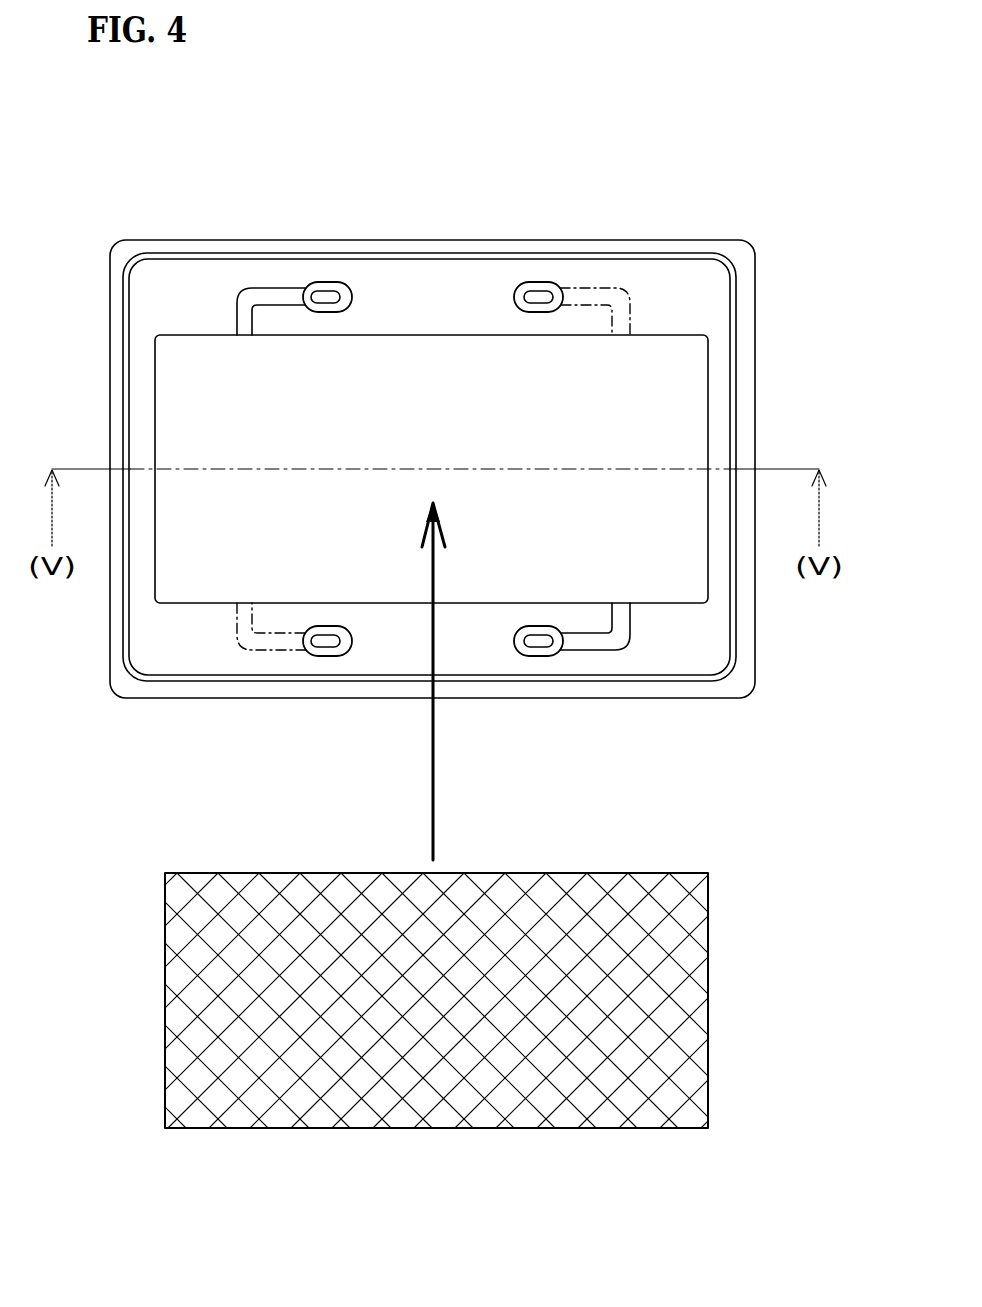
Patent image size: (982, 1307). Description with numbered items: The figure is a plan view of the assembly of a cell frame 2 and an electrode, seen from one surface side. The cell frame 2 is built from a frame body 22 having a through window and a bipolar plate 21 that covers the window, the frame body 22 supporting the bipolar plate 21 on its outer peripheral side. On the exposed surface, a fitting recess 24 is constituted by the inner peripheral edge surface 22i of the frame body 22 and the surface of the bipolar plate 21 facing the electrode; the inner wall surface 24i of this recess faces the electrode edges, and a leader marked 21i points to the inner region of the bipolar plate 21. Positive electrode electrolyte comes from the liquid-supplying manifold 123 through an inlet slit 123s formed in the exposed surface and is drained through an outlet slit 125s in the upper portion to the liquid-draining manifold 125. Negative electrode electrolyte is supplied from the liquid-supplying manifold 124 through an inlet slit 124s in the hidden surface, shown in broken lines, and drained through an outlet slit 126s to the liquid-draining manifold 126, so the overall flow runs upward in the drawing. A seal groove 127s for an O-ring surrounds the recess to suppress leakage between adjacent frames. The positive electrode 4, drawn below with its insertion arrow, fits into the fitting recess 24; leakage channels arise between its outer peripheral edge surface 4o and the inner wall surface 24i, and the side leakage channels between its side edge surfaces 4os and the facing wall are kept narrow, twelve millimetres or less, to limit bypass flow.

The cell frame 2 is at (394, 411).
The frame body 22 is at (162, 298).
The bipolar plate 21 is at (398, 367).
The fitting recess 24 is at (467, 378).
The liquid-draining manifold 125 is at (277, 244).
The outlet slit 125s is at (265, 297).
The liquid-draining manifold 126 is at (609, 246).
The outlet slit 126s is at (632, 305).
The liquid-supplying manifold 124 is at (286, 700).
The inlet slit 124s is at (263, 700).
The liquid-supplying manifold 123 is at (597, 703).
The inlet slit 123s is at (612, 642).
The inner surface of tray body 21i is at (658, 336).
The inner peripheral edge surface 22i is at (158, 412).
The inner wall surface 24i is at (429, 332).
The seal groove 127s is at (743, 592).
The positive electrode 4 is at (218, 898).
The outer peripheral edge surface 4o is at (366, 873).
The side edge surface 4os is at (164, 1040).